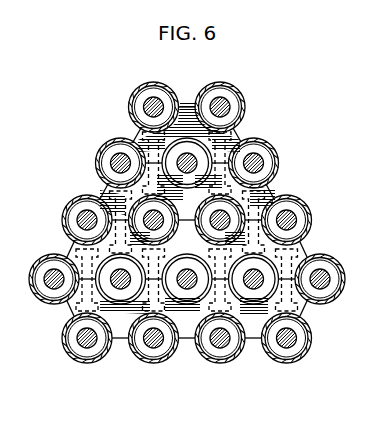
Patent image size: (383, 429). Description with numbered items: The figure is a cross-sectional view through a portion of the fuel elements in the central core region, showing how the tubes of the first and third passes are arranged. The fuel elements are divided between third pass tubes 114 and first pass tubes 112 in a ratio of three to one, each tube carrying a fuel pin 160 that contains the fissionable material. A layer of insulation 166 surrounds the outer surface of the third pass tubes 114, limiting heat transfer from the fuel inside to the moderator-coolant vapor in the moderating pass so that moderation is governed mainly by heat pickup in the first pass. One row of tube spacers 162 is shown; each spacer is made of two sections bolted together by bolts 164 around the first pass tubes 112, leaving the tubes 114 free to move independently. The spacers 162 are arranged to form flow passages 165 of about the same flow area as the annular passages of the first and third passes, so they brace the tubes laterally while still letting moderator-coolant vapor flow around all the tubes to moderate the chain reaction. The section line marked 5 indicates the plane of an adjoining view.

The bolts 164 is at (238, 136).
The tube spacers 162 is at (270, 201).
The layer of insulation 166 is at (70, 204).
The flow passages 165 is at (126, 193).
The section line 5- 5 is at (189, 259).
The third pass tubes 114 is at (90, 362).
The fuel pin 160 is at (187, 351).
The first pass tubes 112 is at (254, 305).